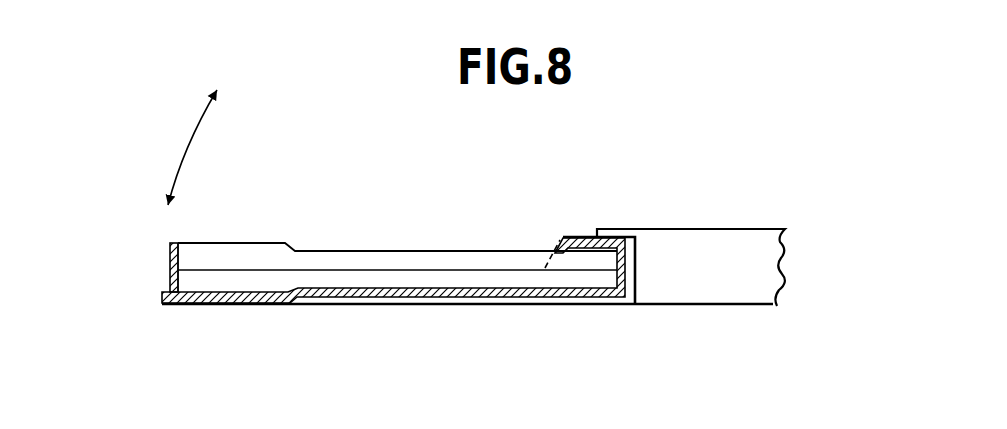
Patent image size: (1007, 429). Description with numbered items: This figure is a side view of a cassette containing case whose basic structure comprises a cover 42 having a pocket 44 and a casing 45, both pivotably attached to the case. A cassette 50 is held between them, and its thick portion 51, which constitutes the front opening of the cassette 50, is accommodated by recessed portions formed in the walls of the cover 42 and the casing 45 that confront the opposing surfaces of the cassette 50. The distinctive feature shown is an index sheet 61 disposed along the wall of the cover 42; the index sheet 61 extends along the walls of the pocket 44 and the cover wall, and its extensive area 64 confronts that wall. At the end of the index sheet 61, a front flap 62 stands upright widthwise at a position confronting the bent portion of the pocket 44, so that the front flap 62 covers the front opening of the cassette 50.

The cover 42 is at (337, 310).
The pocket 44 is at (588, 234).
The casing 45 is at (745, 228).
The cassette 50 is at (467, 247).
The thick portion 51 is at (258, 262).
The index sheet 61 is at (552, 245).
The front flap 62 is at (170, 247).
The extensive area 64 is at (430, 298).